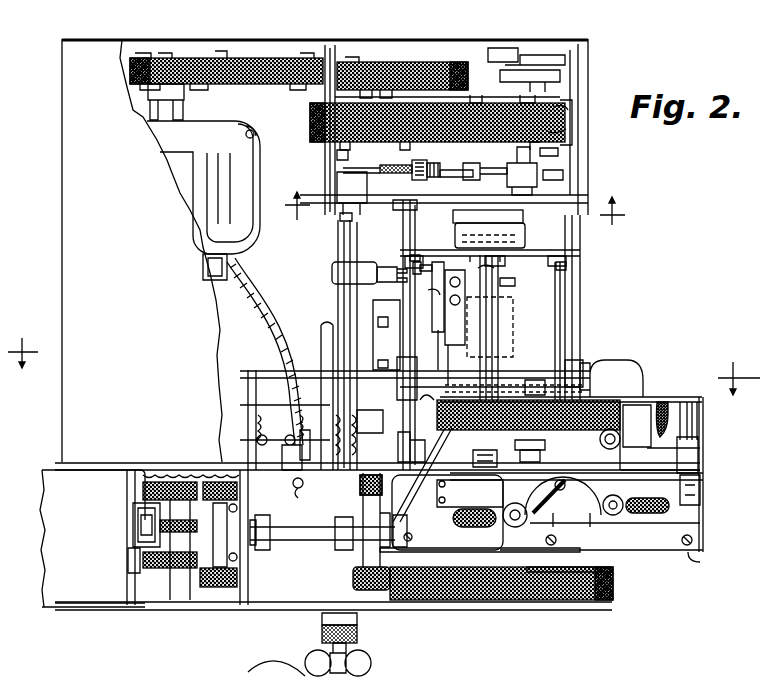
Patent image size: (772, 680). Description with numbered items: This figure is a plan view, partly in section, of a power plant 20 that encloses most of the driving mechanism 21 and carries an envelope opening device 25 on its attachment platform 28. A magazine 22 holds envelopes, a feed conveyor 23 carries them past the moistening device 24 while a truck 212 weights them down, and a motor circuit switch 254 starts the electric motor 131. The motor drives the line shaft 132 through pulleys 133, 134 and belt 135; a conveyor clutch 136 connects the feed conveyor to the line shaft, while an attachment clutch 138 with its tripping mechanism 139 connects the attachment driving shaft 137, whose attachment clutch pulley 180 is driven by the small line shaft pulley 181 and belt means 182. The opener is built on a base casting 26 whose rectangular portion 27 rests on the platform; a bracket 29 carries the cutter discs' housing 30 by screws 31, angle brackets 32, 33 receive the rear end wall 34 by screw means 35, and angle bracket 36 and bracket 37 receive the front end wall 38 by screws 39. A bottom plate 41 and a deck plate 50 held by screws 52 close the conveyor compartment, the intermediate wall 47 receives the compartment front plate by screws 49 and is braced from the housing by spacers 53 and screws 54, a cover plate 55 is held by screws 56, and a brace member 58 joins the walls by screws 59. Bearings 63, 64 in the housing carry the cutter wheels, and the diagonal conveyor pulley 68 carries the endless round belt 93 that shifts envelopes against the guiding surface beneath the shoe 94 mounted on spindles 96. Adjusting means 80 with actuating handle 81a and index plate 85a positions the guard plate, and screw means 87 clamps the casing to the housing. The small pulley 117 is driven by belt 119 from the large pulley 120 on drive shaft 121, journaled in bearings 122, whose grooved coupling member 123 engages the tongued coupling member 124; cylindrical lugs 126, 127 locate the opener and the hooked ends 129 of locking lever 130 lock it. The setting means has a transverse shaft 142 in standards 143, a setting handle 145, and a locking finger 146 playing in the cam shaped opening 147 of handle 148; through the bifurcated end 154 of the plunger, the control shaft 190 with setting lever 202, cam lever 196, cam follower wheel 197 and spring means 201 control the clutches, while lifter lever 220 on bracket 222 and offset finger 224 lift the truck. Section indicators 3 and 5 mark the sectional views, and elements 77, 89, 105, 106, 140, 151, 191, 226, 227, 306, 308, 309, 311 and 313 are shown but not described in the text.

The power plant 20 is at (58, 210).
The driving mechanism 21 is at (294, 122).
The magazine 22 is at (62, 612).
The feed conveyor 23 is at (178, 612).
The envelope moistening device 24 is at (318, 630).
The envelope opening device 25 is at (585, 300).
The base casting 26 is at (570, 296).
The rectangular portion 27 is at (576, 320).
The power plant attachment platform 28 is at (593, 224).
The bracket 29 is at (546, 477).
The cutter discs' housing 30 is at (703, 460).
The screws 31 is at (540, 450).
The angle bracket 32 is at (430, 255).
The angle bracket 33 is at (580, 252).
The rear end wall 34 is at (584, 264).
The screw means 35 is at (418, 255).
The angle bracket 36 is at (428, 456).
The bracket 37 is at (540, 460).
The front end wall 38 is at (722, 490).
The screws 39 is at (393, 478).
The bottom plate 41 is at (700, 445).
The intermediate wall 47 is at (676, 398).
The screws 49 is at (690, 550).
The deck plate 50 is at (703, 520).
The screws 52 is at (553, 547).
The spacers 53 is at (614, 420).
The screws 54 is at (604, 386).
The cover plate 55 is at (420, 310).
The screws 56 is at (400, 262).
The brace member 58 is at (478, 505).
The screws 59 is at (489, 496).
The bearing 63 is at (702, 428).
The bearing 64 is at (640, 445).
The diagonal conveyor pulley 68 is at (550, 331).
The plate 77 is at (668, 396).
The adjusting means 80 is at (592, 483).
The actuating handle 81a is at (540, 568).
The index plate 85a is at (556, 518).
The screw means 87 is at (690, 506).
The plate 89 is at (458, 528).
The endless round belt 93 is at (480, 556).
The shoe 94 is at (599, 531).
The spindles 96 is at (561, 524).
The pivot 105 is at (512, 525).
The link 106 is at (425, 494).
The small pulley 117 is at (650, 396).
The belt 119 is at (532, 395).
The large pulley 120 is at (533, 364).
The drive shaft 121 is at (500, 285).
The bearings 122 is at (505, 270).
The grooved coupling member 123 is at (528, 232).
The tongued coupling member 124 is at (522, 216).
The depending cylindrical lug 126 is at (470, 453).
The rear lug 127 is at (500, 300).
The hooked ends 129 is at (500, 312).
The locking lever 130 is at (512, 335).
The electric motor 131 is at (236, 183).
The line shaft 132 is at (352, 157).
The pulley 133 is at (190, 55).
The pulley 134 is at (288, 60).
The belt 135 is at (232, 62).
The conveyor clutch 136 is at (258, 370).
The attachment driving shaft 137 is at (505, 70).
The attachment clutch 138 is at (563, 153).
The tripping mechanism 139 is at (558, 178).
The rod 140 is at (337, 308).
The transverse shaft 142 is at (533, 368).
The standards 143 is at (586, 380).
The setting handle 145 is at (405, 210).
The locking finger 146 is at (613, 370).
The cam shaped opening 147 is at (606, 381).
The handle 148 is at (635, 382).
The link 151 is at (430, 306).
The bifurcated end 154 is at (430, 293).
The attachment clutch pulley 180 is at (565, 108).
The small line shaft pulley 181 is at (302, 98).
The belt means 182 is at (395, 112).
The control shaft 190 is at (338, 228).
The rod 191 is at (322, 358).
The cam lever 196 is at (414, 168).
The cam follower wheel 197 is at (473, 179).
The spring means 201 is at (455, 170).
The setting lever 202 is at (330, 276).
The truck 212 is at (256, 611).
The lifter lever 220 is at (425, 400).
The bracket 222 is at (465, 327).
The offset finger 224 is at (425, 506).
The link 226 is at (428, 521).
The roller 227 is at (380, 550).
The motor circuit switch 254 is at (300, 488).
The plate 306 is at (153, 474).
The pad 308 is at (140, 570).
The switch 309 is at (145, 505).
The pad 311 is at (172, 482).
The pad 313 is at (180, 560).
The section line 3- 3 is at (384, 366).
The section line 5- 5 is at (456, 213).